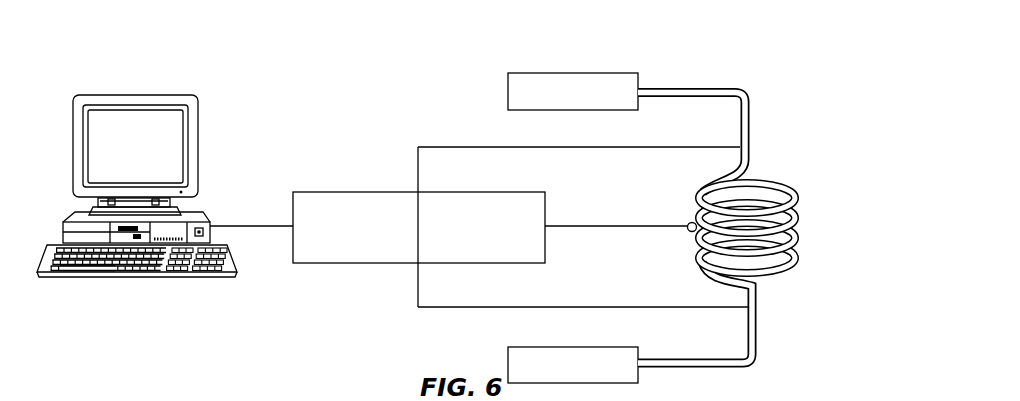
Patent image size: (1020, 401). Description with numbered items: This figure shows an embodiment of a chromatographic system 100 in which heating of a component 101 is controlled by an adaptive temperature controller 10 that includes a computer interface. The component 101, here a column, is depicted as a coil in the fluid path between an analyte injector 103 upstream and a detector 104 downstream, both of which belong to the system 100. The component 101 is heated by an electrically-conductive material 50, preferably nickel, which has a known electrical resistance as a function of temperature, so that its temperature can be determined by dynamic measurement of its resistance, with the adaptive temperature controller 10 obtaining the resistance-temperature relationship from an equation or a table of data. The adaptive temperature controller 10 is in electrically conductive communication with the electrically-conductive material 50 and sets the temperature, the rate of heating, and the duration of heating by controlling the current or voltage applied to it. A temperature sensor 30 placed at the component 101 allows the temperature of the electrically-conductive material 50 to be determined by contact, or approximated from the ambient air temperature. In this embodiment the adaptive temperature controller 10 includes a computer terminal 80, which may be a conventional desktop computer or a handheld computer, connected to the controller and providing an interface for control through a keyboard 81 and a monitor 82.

The chromatographic system 100 is at (761, 51).
The adaptive temperature controller 10 is at (314, 192).
The temperature sensor 30 is at (688, 224).
The electrically-conductive material 50 is at (797, 203).
The component 101 is at (752, 228).
The analyte injector 103 is at (529, 73).
The detector 104 is at (529, 347).
The computer terminal 80 is at (74, 216).
The keyboard 81 is at (66, 277).
The monitor 82 is at (97, 94).